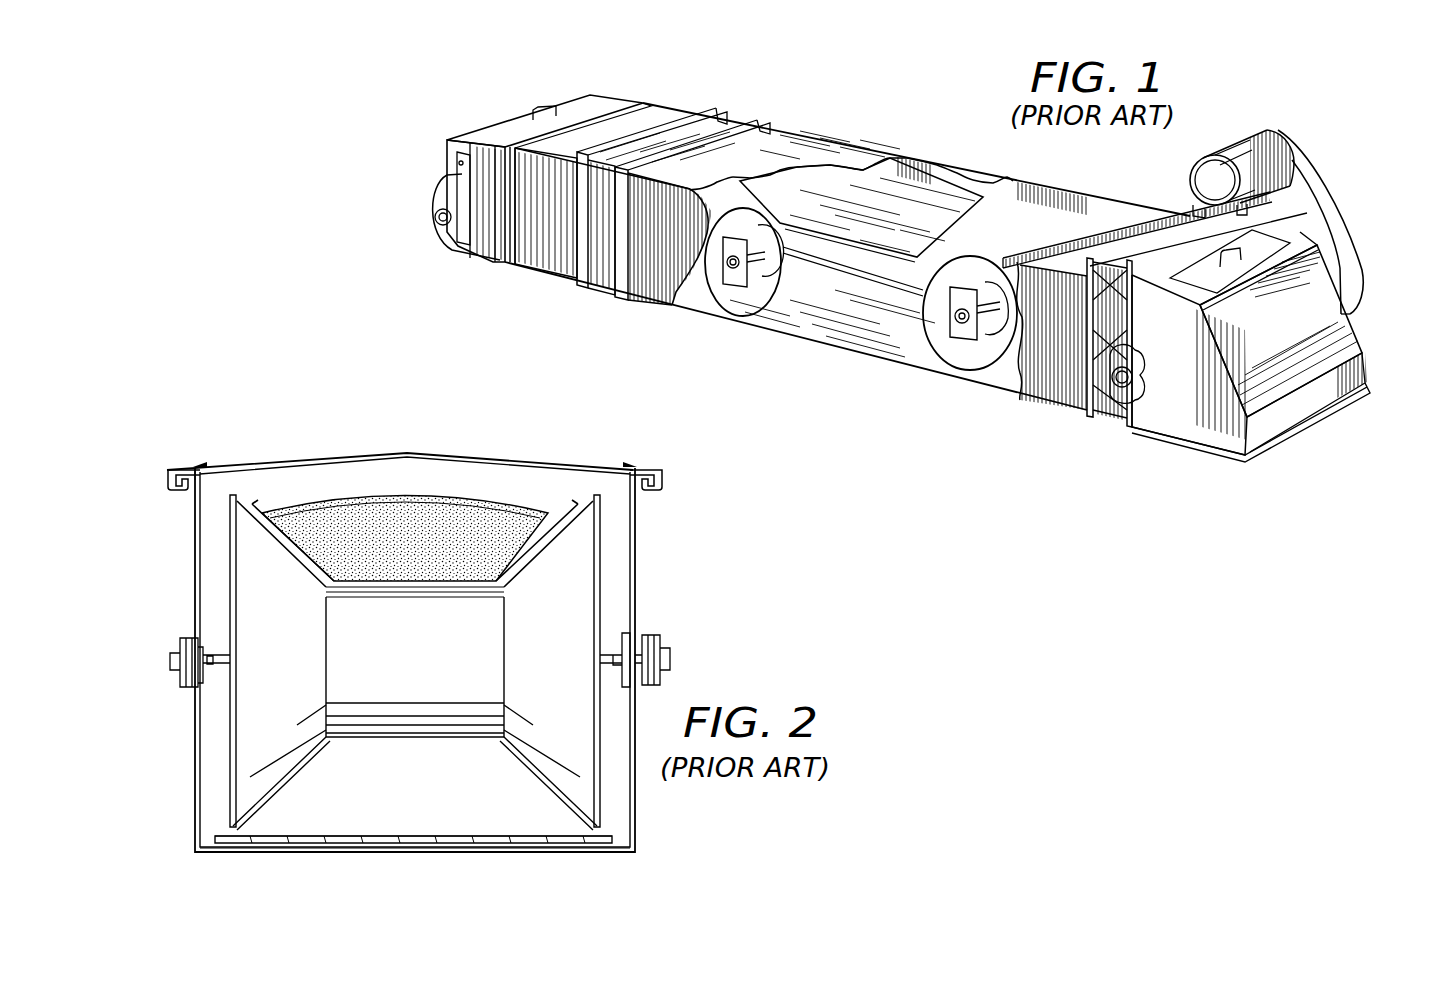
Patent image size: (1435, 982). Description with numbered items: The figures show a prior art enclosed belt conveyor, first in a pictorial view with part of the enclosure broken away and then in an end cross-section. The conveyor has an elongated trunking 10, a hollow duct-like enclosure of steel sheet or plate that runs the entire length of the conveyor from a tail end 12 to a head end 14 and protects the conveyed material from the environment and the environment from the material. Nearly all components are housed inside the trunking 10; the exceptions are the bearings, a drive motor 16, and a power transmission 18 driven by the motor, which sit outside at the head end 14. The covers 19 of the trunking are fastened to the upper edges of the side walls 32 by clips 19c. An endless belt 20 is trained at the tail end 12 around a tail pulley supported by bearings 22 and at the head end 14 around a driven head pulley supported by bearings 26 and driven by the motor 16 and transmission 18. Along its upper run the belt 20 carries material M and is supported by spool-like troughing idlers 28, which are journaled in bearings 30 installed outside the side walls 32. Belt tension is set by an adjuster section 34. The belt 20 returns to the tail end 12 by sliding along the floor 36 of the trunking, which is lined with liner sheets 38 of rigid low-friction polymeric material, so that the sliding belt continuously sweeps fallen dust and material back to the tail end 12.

In FIG. 1, the trunking 10 is at (630, 322).
In FIG. 2, the trunking 10 is at (138, 520).
In FIG. 1, the tail end 12 is at (507, 125).
In FIG. 1, the head end 14 is at (1268, 250).
In FIG. 1, the drive motor 16 is at (1240, 133).
In FIG. 1, the power transmission 18 is at (1353, 304).
In FIG. 1, the cover 19 is at (838, 150).
In FIG. 2, the cover 19 is at (320, 460).
In FIG. 2, the clips 19c is at (167, 478).
In FIG. 1, the endless belt 20 is at (952, 197).
In FIG. 2, the endless belt 20 is at (485, 500).
In FIG. 1, the bearings 22 is at (445, 236).
In FIG. 1, the bearings 26 is at (1142, 373).
In FIG. 1, the troughing idlers 28 is at (775, 282).
In FIG. 2, the troughing idlers 28 is at (390, 744).
In FIG. 1, the bearings 30 is at (733, 290).
In FIG. 2, the bearings 30 is at (186, 636).
In FIG. 1, the side walls 32 is at (675, 298).
In FIG. 2, the side walls 32 is at (195, 558).
In FIG. 1, the adjuster section 34 is at (590, 292).
In FIG. 2, the floor 36 is at (305, 846).
In FIG. 2, the liner sheets 38 is at (522, 865).
In FIG. 2, the material M is at (298, 509).